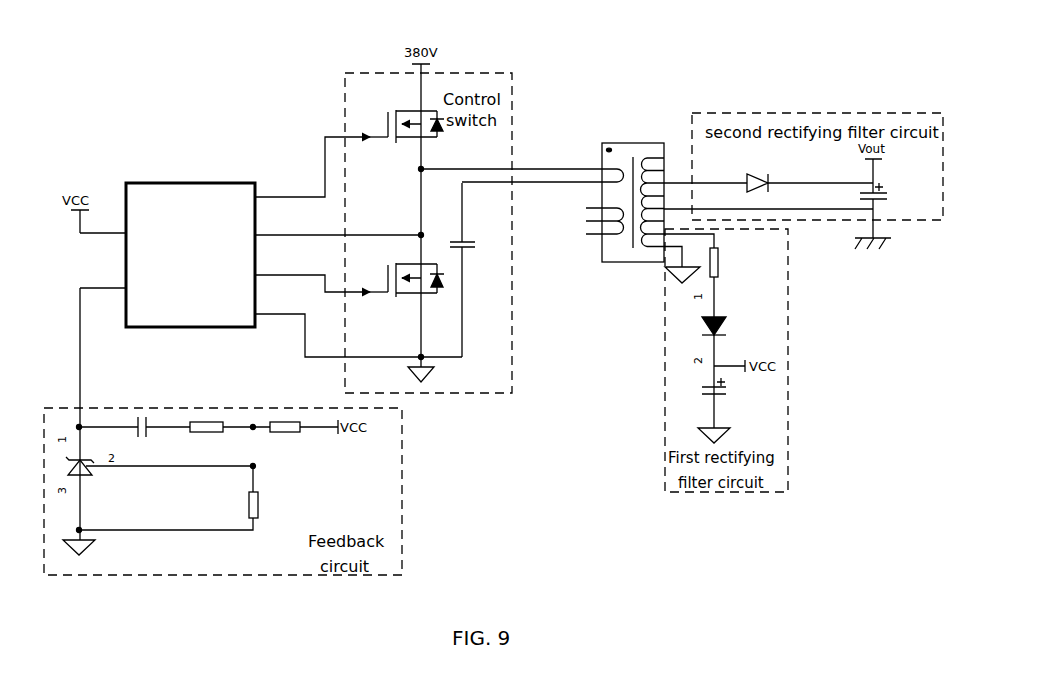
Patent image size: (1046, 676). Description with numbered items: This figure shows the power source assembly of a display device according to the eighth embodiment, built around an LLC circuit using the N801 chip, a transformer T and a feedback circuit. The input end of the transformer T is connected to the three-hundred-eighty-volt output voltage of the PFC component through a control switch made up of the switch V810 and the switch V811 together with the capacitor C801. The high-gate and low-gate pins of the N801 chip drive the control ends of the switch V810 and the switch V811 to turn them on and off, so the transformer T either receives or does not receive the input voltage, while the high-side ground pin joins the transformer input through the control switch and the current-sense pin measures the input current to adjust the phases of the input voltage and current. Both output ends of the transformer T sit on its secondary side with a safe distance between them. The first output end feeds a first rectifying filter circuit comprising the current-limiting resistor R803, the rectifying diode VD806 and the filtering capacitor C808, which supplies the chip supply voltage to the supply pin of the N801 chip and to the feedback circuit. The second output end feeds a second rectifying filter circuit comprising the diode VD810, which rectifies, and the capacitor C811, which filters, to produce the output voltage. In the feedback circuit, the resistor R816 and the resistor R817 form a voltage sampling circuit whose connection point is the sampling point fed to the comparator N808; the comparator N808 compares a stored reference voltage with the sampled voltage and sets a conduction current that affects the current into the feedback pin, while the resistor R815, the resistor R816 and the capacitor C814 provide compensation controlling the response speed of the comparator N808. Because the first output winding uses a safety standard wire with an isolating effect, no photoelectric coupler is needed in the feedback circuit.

The N801 chip N801 is at (190, 246).
The switch V810 is at (408, 118).
The switch V811 is at (408, 271).
The capacitor C801 is at (451, 270).
The transformer T is at (630, 192).
The diode VD810 is at (754, 175).
The capacitor C811 is at (893, 210).
The resistor R803 is at (733, 262).
The diode VD806 is at (735, 330).
The capacitor C808 is at (734, 389).
The comparator N808 is at (96, 476).
The capacitor C814 is at (143, 437).
The resistor R815 is at (207, 440).
The resistor R816 is at (288, 440).
The resistor R817 is at (273, 505).